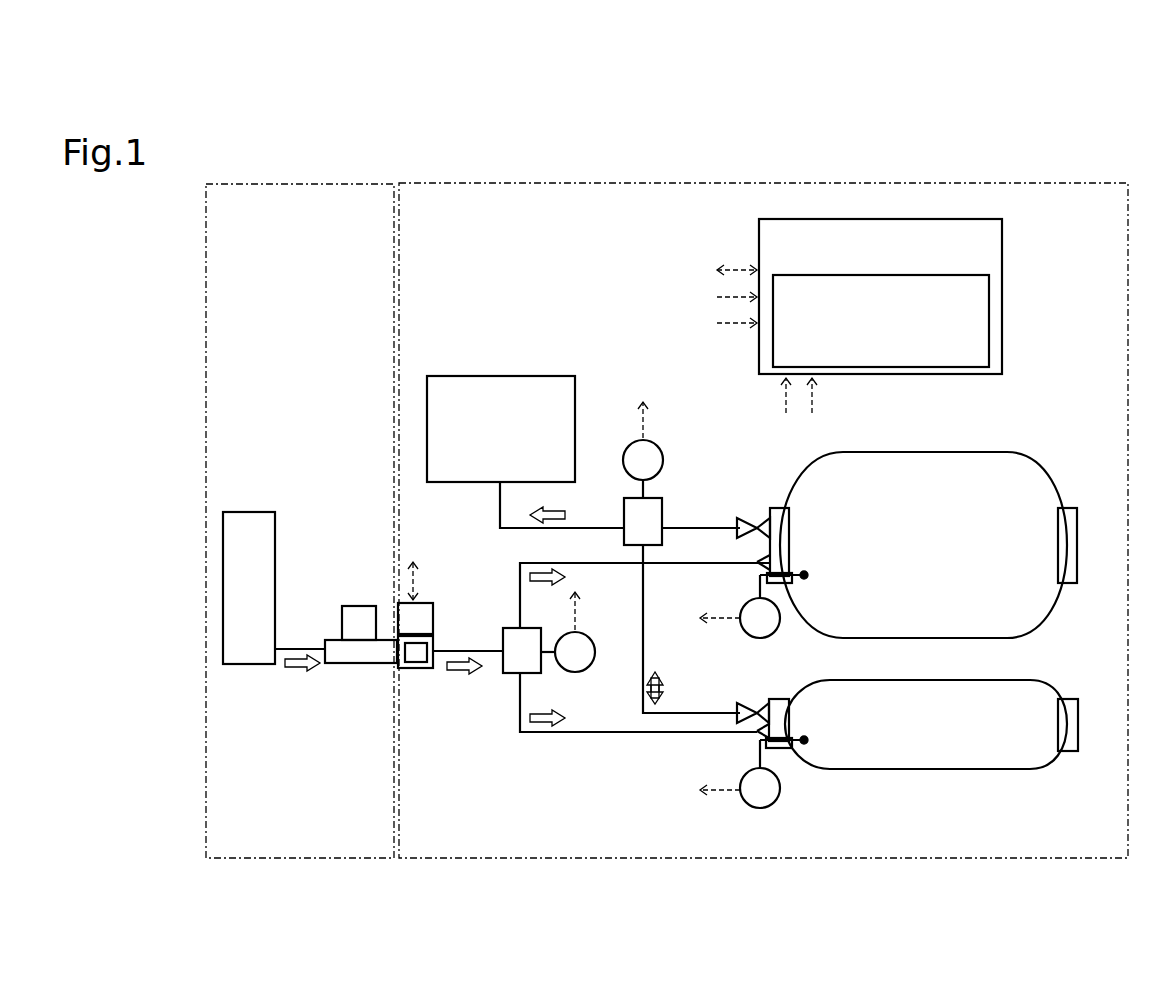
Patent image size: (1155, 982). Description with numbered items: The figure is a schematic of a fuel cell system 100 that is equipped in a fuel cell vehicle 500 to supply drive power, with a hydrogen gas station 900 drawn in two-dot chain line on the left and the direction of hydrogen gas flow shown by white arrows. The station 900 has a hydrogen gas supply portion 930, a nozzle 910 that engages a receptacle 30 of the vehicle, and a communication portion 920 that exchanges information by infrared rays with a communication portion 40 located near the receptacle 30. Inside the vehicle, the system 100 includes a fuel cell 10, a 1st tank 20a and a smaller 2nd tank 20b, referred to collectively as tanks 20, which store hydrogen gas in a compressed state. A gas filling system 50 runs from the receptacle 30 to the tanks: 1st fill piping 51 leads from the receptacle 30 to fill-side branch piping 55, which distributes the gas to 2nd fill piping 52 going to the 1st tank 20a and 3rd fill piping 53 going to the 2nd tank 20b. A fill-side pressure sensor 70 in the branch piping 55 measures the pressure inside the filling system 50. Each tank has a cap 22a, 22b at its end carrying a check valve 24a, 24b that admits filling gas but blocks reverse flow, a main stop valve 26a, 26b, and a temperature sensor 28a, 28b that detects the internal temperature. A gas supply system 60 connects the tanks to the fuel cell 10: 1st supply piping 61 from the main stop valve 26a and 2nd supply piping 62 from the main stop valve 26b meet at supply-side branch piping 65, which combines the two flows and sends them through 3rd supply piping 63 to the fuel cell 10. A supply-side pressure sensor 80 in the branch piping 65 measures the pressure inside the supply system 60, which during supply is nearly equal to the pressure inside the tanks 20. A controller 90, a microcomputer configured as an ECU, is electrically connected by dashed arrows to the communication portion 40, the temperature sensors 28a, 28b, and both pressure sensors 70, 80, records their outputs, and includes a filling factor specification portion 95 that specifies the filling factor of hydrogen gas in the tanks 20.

The hydrogen gas station 900 is at (330, 184).
The fuel cell vehicle 500 is at (935, 183).
The fuel cell system 100 is at (919, 307).
The controller 90 is at (1002, 298).
The filling factor specification portion 95 is at (903, 367).
The fuel cell 10 is at (490, 376).
The gas supply system 60 is at (603, 552).
The 1st supply piping 61 is at (700, 528).
The 2nd supply piping 62 is at (645, 628).
The 3rd supply piping 63 is at (500, 510).
The supply-side branch piping 65 is at (624, 515).
The supply-side pressure sensor 80 is at (626, 452).
The tanks 20 is at (952, 615).
The 1st tank 20a is at (1012, 455).
The 2nd tank 20b is at (1003, 770).
The cap 22a is at (792, 524).
The cap 22b is at (792, 713).
The check valve 24a is at (760, 578).
The check valve 24b is at (758, 742).
The main stop valve 26a is at (749, 520).
The main stop valve 26b is at (749, 705).
The 1st temperature sensor 28a is at (772, 640).
The 2nd temperature sensor 28b is at (770, 806).
The gas filling system 50 is at (595, 691).
The 1st fill piping 51 is at (470, 651).
The 2nd fill piping 52 is at (618, 566).
The 3rd fill piping 53 is at (622, 735).
The fill-side branch piping 55 is at (517, 675).
The fill-side pressure sensor 70 is at (585, 672).
The receptacle 30 is at (420, 670).
The communication portion 40 is at (425, 603).
The nozzle 910 is at (355, 666).
The communication portion 920 is at (355, 606).
The hydrogen gas supply portion 930 is at (260, 512).